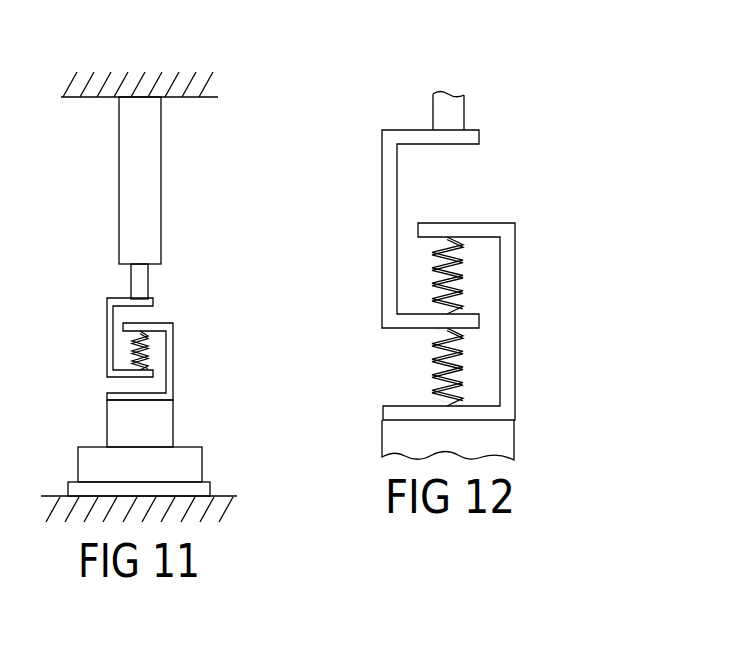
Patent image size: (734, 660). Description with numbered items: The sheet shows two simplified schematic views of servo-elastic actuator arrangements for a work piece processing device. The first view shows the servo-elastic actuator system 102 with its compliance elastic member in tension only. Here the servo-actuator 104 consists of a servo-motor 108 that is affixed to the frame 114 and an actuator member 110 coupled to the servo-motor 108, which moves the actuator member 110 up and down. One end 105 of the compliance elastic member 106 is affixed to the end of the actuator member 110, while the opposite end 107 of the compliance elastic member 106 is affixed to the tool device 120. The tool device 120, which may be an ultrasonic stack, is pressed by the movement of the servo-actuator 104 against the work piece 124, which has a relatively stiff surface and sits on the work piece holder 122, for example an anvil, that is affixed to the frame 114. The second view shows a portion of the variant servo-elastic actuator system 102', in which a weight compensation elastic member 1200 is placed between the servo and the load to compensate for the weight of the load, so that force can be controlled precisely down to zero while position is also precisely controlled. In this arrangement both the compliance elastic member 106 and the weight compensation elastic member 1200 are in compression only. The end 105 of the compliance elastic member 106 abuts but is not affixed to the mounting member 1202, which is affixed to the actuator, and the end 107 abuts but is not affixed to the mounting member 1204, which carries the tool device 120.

In FIG. 11, the servo-elastic actuator system 102 is at (191, 259).
In FIG. 12, the servo-elastic actuator system 102' is at (449, 257).
In FIG. 11, the servo-actuator 104 is at (192, 147).
In FIG. 12, the servo-actuator 104 is at (531, 195).
In FIG. 12, the end of elastic member 105 is at (437, 333).
In FIG. 11, the compliance elastic member 106 is at (159, 352).
In FIG. 12, the compliance elastic member 106 is at (472, 365).
In FIG. 12, the opposite end of elastic member 107 is at (457, 406).
In FIG. 11, the servo-motor 108 is at (161, 195).
In FIG. 11, the actuator member 110 is at (142, 278).
In FIG. 12, the actuator member 110 is at (458, 112).
In FIG. 11, the frame 114 is at (210, 97).
In FIG. 11, the tool device 120 is at (158, 423).
In FIG. 12, the tool device 120 is at (497, 437).
In FIG. 11, the work piece holder 122 is at (213, 490).
In FIG. 11, the work piece 124 is at (212, 465).
In FIG. 12, the weight compensation elastic member 1200 is at (472, 273).
In FIG. 12, the mounting member 1202 is at (382, 230).
In FIG. 12, the mounting member 1204 is at (516, 317).